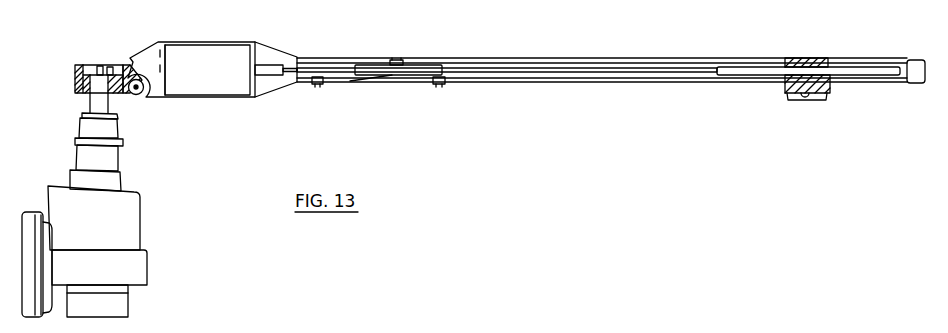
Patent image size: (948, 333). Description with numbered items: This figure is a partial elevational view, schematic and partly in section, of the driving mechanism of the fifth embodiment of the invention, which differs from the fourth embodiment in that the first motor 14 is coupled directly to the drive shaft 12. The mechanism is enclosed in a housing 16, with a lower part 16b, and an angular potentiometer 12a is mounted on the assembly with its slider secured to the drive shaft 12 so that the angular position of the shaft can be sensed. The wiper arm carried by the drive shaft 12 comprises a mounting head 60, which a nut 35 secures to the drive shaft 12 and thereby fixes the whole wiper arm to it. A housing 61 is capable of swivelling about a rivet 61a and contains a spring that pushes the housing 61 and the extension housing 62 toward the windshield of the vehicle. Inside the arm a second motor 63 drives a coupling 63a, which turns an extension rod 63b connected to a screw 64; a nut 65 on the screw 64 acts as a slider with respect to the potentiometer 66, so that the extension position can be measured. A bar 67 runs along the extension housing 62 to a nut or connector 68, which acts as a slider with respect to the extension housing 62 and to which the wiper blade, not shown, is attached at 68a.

The drive shaft 12 is at (95, 103).
The angular potentiometer 12a is at (123, 305).
The first motor 14 is at (31, 213).
The housing 16 is at (113, 155).
The flange of hub body 16b is at (142, 265).
The nut 35 is at (84, 82).
The mounting head 60 is at (77, 72).
The housing 61 is at (197, 41).
The rivet 61a is at (137, 95).
The extension housing 62 is at (480, 58).
The motor 63 is at (215, 67).
The coupling 63a is at (270, 68).
The extension rod 63b is at (335, 68).
The screw 64 is at (425, 72).
The nut 65 is at (397, 60).
The potentiometer 66 is at (352, 85).
The slide bar 67 is at (743, 68).
The connector 68 is at (790, 88).
The blade attachment point 68a is at (807, 94).